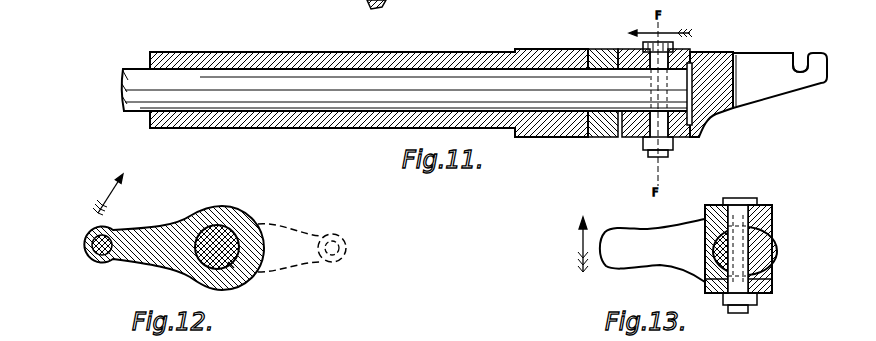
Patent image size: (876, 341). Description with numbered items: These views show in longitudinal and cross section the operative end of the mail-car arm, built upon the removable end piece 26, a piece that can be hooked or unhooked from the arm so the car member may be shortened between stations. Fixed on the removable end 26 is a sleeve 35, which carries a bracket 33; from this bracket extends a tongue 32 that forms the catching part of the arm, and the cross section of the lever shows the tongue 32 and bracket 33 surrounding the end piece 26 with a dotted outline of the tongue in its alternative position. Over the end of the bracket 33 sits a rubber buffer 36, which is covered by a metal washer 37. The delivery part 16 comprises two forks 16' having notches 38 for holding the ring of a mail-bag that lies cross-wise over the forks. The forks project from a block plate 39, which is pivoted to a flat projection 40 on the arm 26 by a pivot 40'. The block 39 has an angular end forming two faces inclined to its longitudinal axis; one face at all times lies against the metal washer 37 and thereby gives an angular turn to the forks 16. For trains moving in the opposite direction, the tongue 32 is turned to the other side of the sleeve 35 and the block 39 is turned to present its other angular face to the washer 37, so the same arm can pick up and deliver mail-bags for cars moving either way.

In FIG. 11, the delivery part 16 is at (780, 80).
In FIG. 11, the forks 16' is at (794, 102).
In FIG. 11, the removable end piece 26 is at (405, 90).
In FIG. 12, the removable end piece 26 is at (252, 270).
In FIG. 13, the removable end piece 26 is at (772, 258).
In FIG. 12, the tongue 32 is at (104, 259).
In FIG. 12, the bracket 33 is at (234, 216).
In FIG. 13, the bracket 33 is at (652, 250).
In FIG. 11, the sleeve 35 is at (412, 52).
In FIG. 11, the rubber buffer 36 is at (600, 140).
In FIG. 11, the metal washer 37 is at (613, 141).
In FIG. 11, the notches 38 is at (803, 70).
In FIG. 11, the block plate 39 is at (713, 114).
In FIG. 13, the block plate 39 is at (770, 212).
In FIG. 11, the flat projection 40 is at (687, 101).
In FIG. 13, the flat projection 40 is at (768, 259).
In FIG. 11, the pivot 40' is at (648, 29).
In FIG. 13, the pivot 40' is at (742, 192).